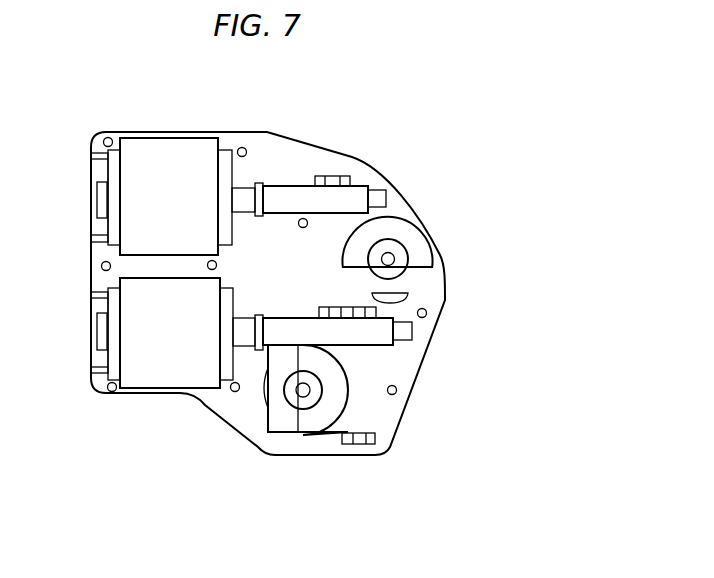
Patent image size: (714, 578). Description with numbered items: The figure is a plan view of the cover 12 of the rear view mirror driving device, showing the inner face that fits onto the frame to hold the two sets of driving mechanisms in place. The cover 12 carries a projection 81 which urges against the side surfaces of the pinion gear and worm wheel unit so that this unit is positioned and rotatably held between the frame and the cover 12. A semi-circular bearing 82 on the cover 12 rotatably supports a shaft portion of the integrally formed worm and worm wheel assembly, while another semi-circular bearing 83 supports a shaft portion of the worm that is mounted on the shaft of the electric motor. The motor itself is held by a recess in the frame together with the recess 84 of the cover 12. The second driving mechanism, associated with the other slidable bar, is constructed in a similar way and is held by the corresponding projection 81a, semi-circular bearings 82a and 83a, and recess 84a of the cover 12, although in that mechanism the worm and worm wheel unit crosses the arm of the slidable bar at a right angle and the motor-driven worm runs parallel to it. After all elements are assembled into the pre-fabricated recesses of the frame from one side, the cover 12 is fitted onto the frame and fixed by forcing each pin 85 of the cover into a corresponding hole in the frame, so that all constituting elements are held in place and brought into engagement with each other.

The cover 12 is at (122, 396).
The projection 81 is at (407, 230).
The projection of the cover 81a is at (285, 423).
The semi-circular bearing 82 is at (329, 176).
The semi-circular bearing 82a is at (367, 293).
The semi-circular bearing 83 is at (236, 184).
The semi-circular bearing 83a is at (258, 315).
The recess 84 is at (168, 180).
The recess 84a is at (167, 367).
The pin 85 is at (108, 137).